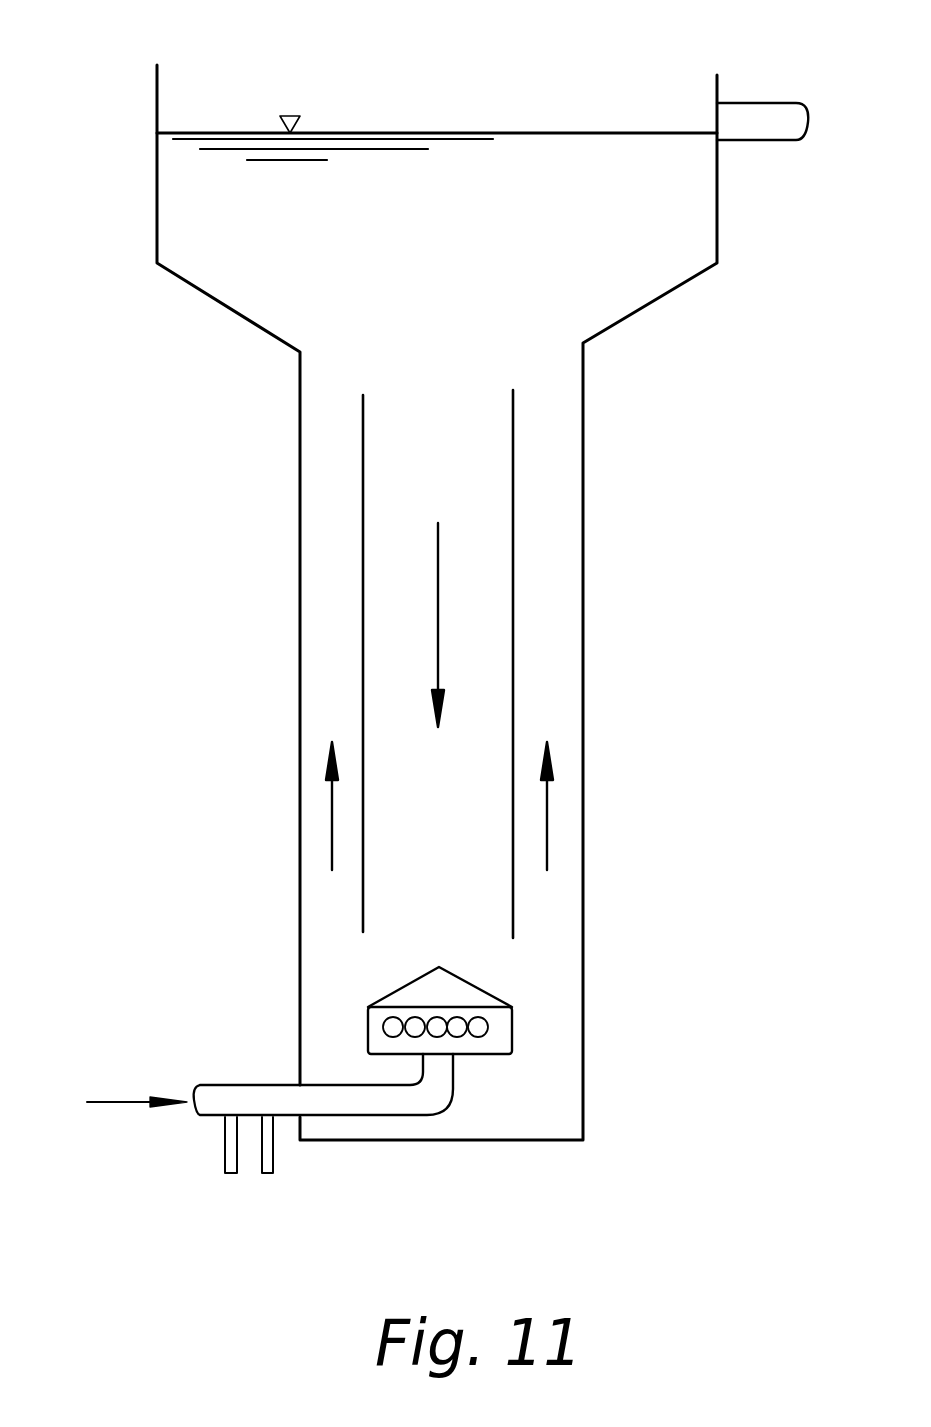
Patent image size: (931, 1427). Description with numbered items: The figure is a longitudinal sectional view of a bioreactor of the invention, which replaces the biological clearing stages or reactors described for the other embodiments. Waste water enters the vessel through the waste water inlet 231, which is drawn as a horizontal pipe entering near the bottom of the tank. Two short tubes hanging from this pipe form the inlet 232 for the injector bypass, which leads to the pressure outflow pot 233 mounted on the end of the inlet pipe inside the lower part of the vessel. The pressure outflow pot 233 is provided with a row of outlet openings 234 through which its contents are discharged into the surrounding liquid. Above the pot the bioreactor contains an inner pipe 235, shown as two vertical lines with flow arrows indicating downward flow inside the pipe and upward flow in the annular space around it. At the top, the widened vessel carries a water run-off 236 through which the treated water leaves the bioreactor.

The waste water inlet 231 is at (120, 1102).
The inlet for the injector bypass 232 is at (268, 1175).
The pressure outflow pot 233 is at (477, 982).
The outlet openings 234 is at (512, 1032).
The inner pipe 235 is at (513, 608).
The water run-off 236 is at (778, 103).